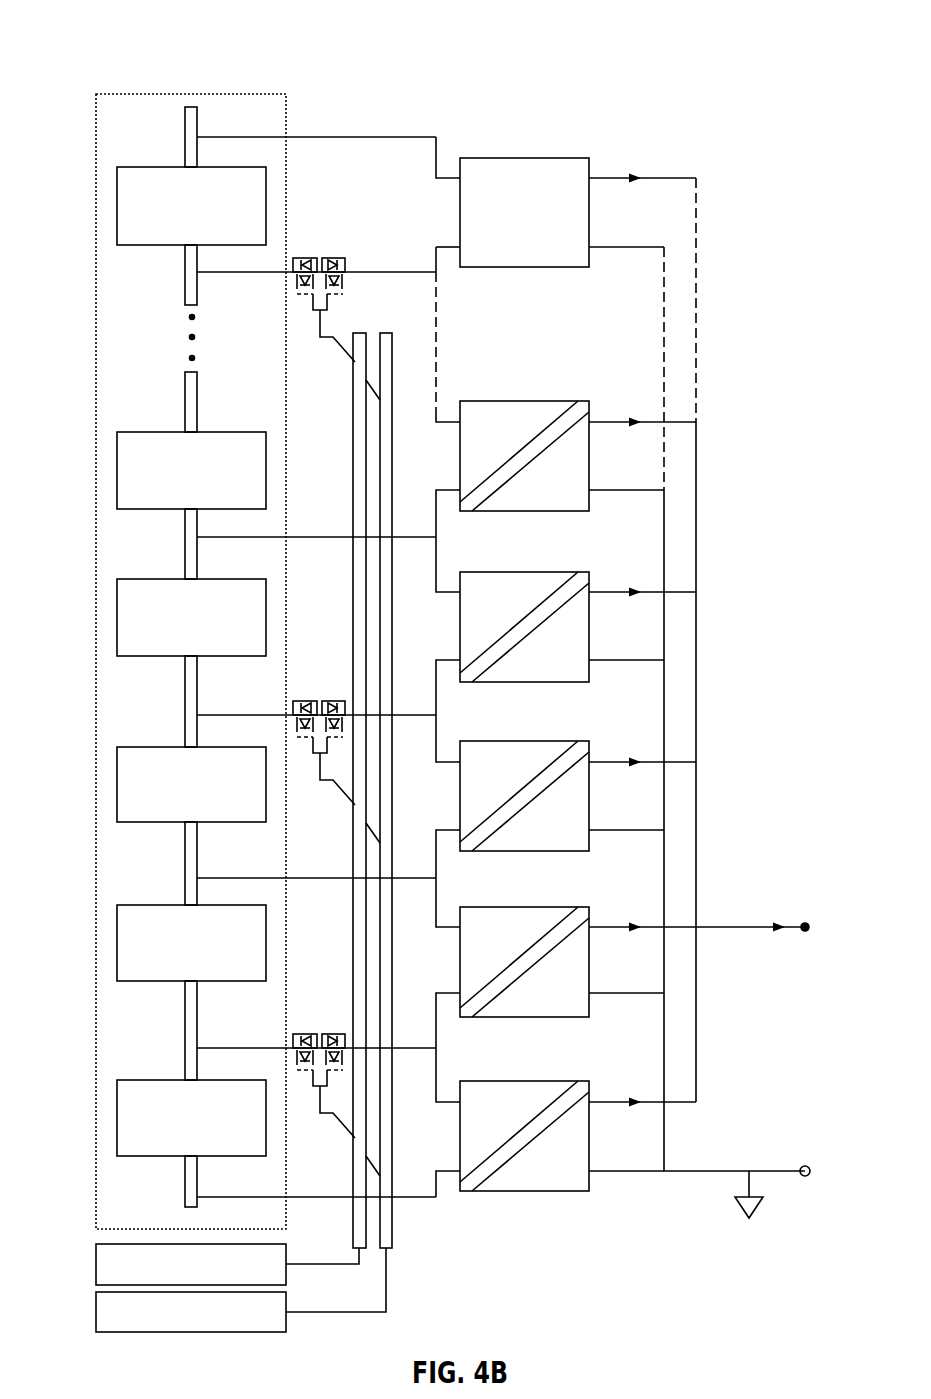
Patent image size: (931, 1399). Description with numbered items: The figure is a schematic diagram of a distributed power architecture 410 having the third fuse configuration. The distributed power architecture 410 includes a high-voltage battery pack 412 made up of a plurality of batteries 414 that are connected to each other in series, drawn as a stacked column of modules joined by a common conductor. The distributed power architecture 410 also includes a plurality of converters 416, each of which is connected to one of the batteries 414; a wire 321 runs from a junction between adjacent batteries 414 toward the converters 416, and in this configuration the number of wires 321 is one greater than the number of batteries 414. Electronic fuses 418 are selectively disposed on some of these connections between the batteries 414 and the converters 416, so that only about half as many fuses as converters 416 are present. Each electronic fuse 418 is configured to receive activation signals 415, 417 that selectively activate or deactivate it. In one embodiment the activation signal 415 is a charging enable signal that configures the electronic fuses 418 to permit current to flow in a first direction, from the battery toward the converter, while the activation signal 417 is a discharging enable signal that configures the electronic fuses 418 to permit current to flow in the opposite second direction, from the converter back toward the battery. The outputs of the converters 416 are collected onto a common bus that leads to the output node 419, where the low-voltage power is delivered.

The distributed power architecture 410 is at (114, 42).
The high-voltage battery pack 412 is at (272, 82).
The battery 414 is at (211, 219).
The wire 321 is at (205, 548).
The electronic fuse 418 is at (323, 238).
The converter 416 is at (546, 224).
The activation signal 415 is at (211, 1278).
The activation signal 417 is at (211, 1326).
The output node 419 is at (811, 906).